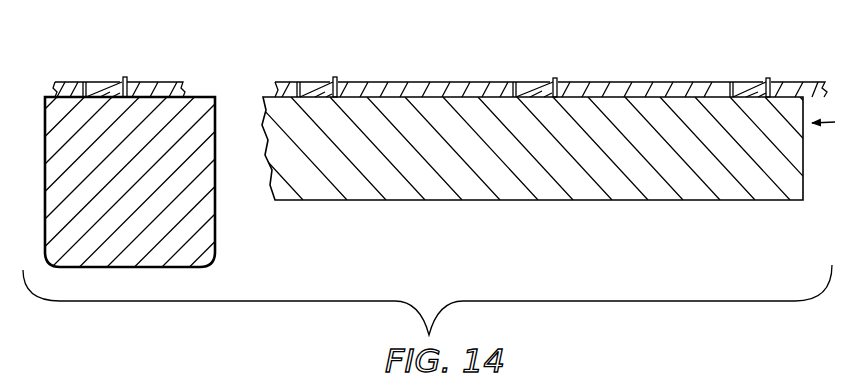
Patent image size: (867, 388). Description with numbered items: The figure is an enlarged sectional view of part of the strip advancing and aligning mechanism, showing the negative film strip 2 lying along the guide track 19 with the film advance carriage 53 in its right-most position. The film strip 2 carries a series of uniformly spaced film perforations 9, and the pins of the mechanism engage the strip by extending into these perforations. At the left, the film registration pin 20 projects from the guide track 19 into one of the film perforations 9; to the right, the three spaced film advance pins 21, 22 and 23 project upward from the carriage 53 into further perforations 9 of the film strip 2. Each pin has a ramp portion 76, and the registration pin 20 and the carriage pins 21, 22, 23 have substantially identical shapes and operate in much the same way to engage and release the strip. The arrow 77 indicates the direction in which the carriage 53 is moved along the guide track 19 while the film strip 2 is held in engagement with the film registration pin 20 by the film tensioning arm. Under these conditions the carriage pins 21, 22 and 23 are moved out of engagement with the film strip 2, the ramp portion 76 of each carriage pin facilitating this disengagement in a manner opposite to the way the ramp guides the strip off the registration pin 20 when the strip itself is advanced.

The negative film strip 2 is at (183, 82).
The film perforations 9 is at (83, 82).
The guide track 19 is at (212, 237).
The film registration pin 20 is at (118, 82).
The film advance pin 21 is at (335, 82).
The film advance pin 22 is at (556, 78).
The film advance pin 23 is at (768, 78).
The film advance carriage 53 is at (552, 192).
The ramp portion 76 is at (97, 88).
The arrow 77 is at (835, 122).